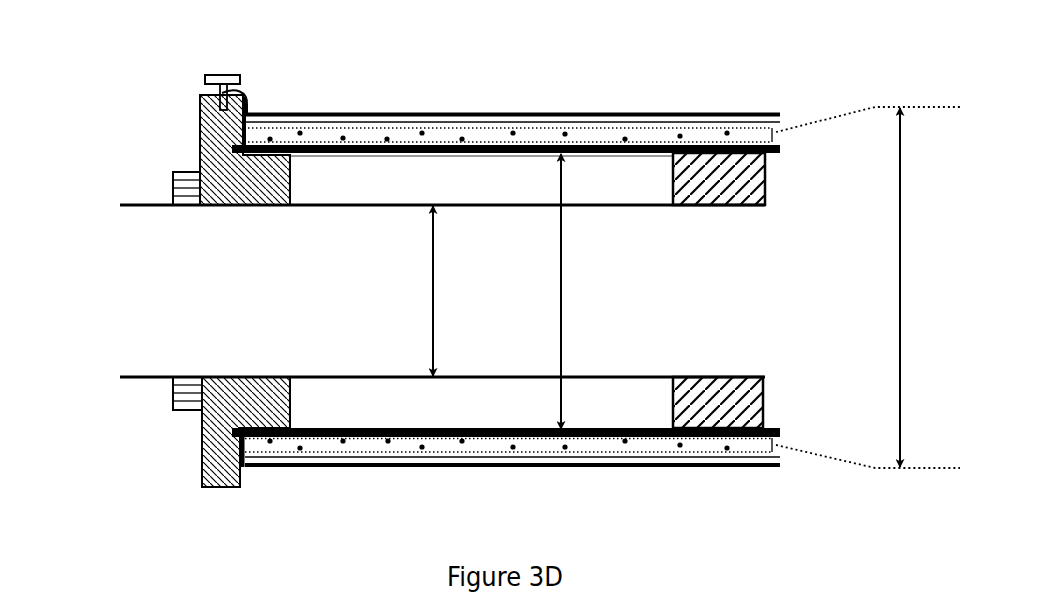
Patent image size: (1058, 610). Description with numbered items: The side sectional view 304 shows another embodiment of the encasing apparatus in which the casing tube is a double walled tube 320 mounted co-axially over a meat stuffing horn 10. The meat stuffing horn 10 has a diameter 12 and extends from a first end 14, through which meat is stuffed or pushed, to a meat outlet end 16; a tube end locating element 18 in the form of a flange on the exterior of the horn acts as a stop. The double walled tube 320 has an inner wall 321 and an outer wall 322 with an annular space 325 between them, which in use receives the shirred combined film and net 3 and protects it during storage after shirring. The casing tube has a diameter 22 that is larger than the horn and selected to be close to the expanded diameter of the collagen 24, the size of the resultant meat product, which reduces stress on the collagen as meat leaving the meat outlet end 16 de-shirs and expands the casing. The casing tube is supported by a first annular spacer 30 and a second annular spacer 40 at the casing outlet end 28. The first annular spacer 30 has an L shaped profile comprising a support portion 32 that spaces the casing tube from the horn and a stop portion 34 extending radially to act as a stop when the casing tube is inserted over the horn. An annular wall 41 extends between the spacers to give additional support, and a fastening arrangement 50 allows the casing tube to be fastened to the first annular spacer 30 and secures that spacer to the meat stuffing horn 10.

The side sectional view 304 is at (133, 68).
The first annular spacer 30 is at (200, 128).
The tube end locating element 18 is at (173, 181).
The first end 14 is at (135, 295).
The meat outlet end 16 is at (722, 293).
The fastening arrangement 50 is at (268, 96).
The meat stuffing horn 10 is at (345, 203).
The double walled tube 320 is at (487, 112).
The inner wall 321 is at (533, 138).
The shirred combined film and net 3 is at (615, 123).
The casing outlet end 28 is at (750, 125).
The outer wall 322 is at (786, 115).
The annular space 325 is at (787, 128).
The annular wall 41 is at (479, 157).
The second annular spacer 40 is at (672, 190).
The expanded diameter of the collagen 24 is at (917, 287).
The diameter of the meat stuffing horn 12 is at (433, 309).
The diameter of the casing tube 22 is at (542, 291).
The support portion 32 is at (294, 395).
The stop portion 34 is at (243, 479).